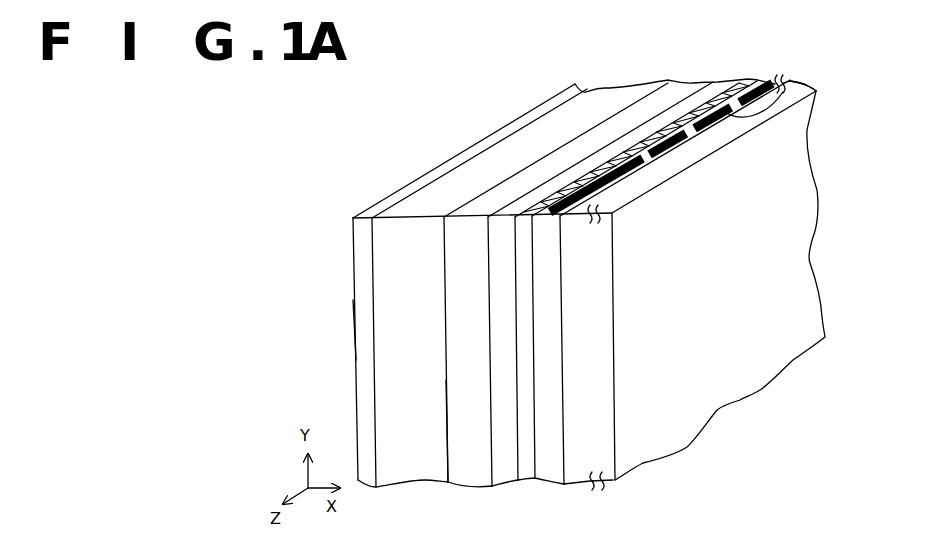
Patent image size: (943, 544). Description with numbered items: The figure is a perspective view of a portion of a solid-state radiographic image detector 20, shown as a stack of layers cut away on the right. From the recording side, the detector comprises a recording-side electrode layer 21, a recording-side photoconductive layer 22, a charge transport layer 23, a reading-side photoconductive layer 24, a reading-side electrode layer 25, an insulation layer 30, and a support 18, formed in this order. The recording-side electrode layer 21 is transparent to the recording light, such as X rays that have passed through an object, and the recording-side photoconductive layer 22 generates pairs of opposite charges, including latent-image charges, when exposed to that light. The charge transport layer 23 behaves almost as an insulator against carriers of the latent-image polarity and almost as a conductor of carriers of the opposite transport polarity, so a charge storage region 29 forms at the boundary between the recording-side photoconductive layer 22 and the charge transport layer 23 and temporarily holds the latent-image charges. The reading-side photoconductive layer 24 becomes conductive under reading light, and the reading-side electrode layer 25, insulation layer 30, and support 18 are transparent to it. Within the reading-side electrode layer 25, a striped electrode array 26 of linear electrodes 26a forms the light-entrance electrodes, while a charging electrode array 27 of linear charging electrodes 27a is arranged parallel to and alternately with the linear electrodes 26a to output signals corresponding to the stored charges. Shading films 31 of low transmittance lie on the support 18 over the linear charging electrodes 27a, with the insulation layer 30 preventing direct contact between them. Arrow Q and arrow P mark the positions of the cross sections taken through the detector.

The support 18 is at (603, 480).
The solid-state radiographic image detector 20 is at (387, 185).
The recording-side electrode layer 21 is at (365, 482).
The recording-side photoconductive layer 22 is at (398, 484).
The charge transport layer 23 is at (470, 484).
The reading-side photoconductive layer 24 is at (504, 485).
The reading-side electrode layer 25 is at (528, 480).
The striped electrode array 26 is at (636, 114).
The linear electrodes 26a is at (696, 105).
The charging electrode array 27 is at (661, 124).
The linear charging electrodes 27a is at (725, 93).
The charge storage region 29 is at (446, 453).
The insulation layer 30 is at (764, 82).
The shading films 31 is at (786, 94).
The arrow P is at (627, 142).
The arrow Q is at (350, 327).